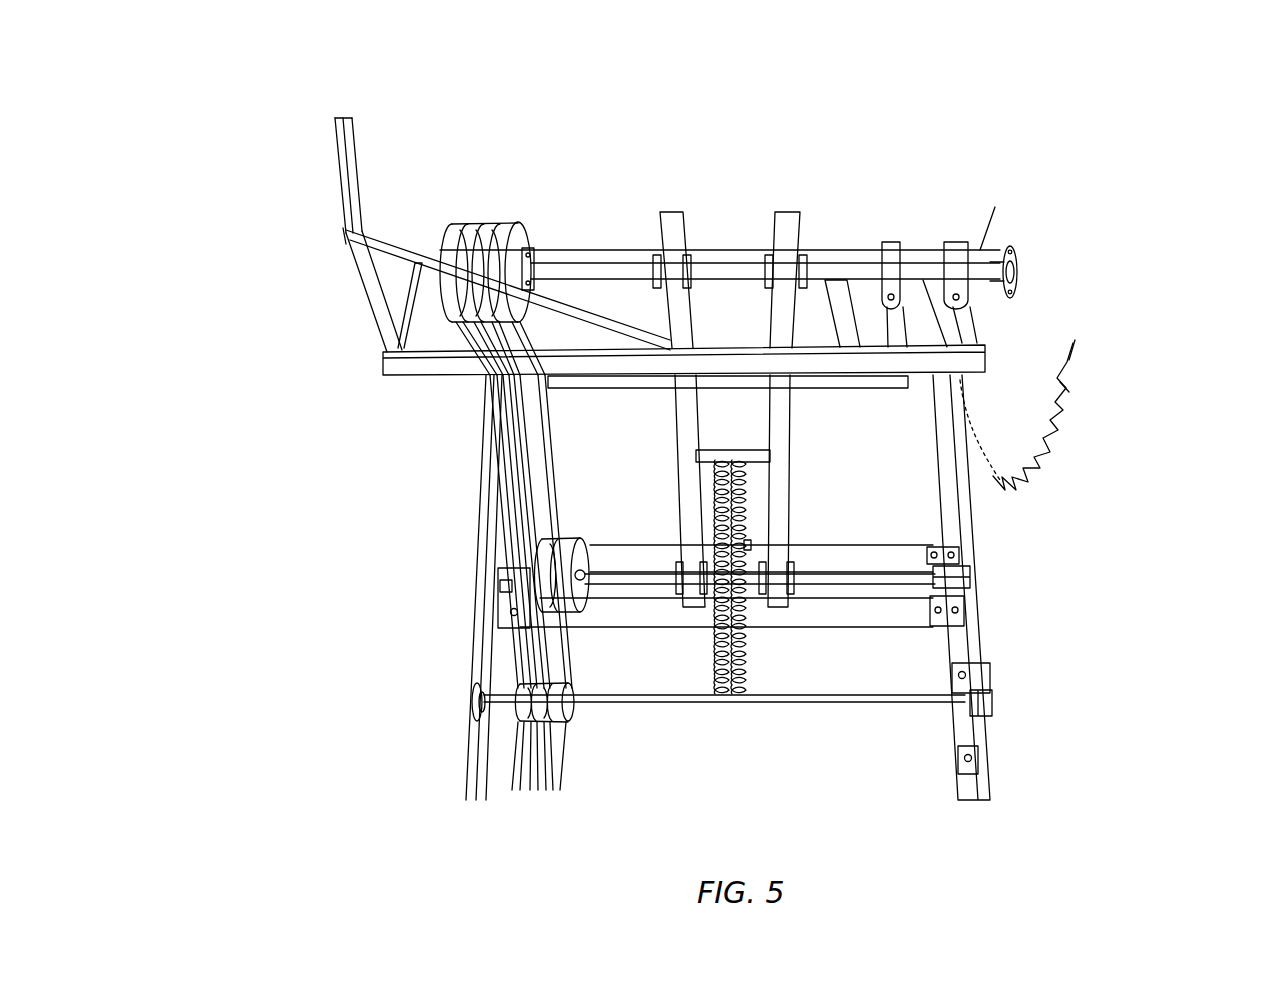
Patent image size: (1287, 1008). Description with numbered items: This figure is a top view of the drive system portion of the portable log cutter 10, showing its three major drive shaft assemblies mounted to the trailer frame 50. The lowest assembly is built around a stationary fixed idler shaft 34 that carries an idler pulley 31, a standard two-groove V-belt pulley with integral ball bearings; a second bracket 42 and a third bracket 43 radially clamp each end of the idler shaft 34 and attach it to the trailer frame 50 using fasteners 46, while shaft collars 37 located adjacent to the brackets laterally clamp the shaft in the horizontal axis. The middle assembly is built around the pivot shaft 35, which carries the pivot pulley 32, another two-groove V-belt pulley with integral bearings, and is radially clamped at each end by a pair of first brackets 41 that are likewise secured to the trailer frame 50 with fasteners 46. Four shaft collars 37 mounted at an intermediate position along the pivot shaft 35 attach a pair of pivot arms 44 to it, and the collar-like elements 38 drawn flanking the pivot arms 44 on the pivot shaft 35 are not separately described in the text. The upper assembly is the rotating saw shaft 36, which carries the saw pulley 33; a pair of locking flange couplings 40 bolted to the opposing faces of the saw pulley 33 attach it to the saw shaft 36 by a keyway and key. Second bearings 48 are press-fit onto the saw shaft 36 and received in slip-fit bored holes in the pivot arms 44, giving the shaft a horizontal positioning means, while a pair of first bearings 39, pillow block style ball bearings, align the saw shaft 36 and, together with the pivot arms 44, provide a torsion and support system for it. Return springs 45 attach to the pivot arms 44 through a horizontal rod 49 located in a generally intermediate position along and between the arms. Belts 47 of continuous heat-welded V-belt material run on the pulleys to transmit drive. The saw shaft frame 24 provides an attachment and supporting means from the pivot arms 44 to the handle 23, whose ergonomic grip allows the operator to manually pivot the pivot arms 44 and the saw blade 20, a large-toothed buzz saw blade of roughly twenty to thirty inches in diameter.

The portable log cutter 10 is at (243, 188).
The saw blade 20 is at (1035, 345).
The handle 23 is at (340, 146).
The saw shaft frame 24 is at (418, 255).
The idler pulley 31 is at (527, 710).
The pivot pulley 32 is at (577, 610).
The saw pulley 33 is at (512, 224).
The idler shaft 34 is at (682, 702).
The pivot shaft 35 is at (862, 577).
The saw shaft 36 is at (602, 272).
The shaft collars 37 is at (585, 577).
The bearing 38 is at (700, 572).
The first bearings 39 is at (962, 255).
The flange couplings 40 is at (532, 250).
The first brackets 41 is at (505, 595).
The second bracket 42 is at (977, 722).
The third bracket 43 is at (467, 763).
The pivot arms 44 is at (782, 450).
The return springs 45 is at (746, 690).
The fasteners 46 is at (507, 617).
The belts 47 is at (558, 495).
The second bearings 48 is at (800, 262).
The horizontal rod 49 is at (700, 456).
The trailer frame 50 is at (960, 485).